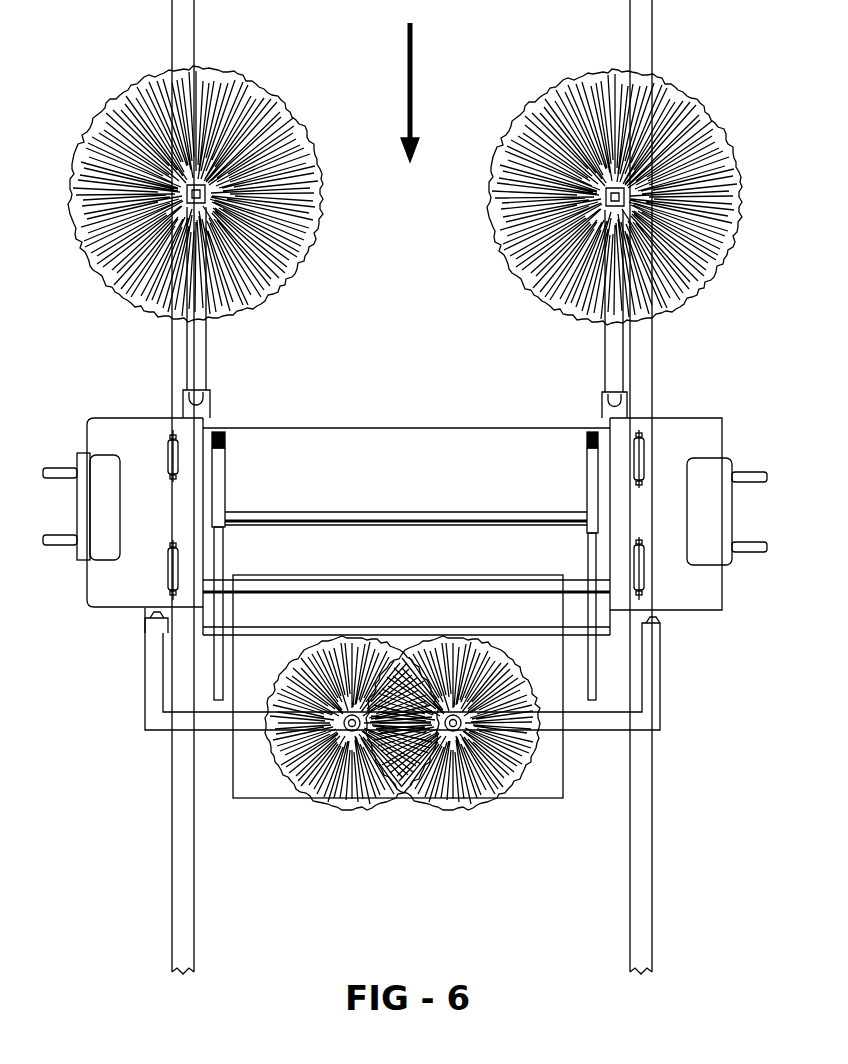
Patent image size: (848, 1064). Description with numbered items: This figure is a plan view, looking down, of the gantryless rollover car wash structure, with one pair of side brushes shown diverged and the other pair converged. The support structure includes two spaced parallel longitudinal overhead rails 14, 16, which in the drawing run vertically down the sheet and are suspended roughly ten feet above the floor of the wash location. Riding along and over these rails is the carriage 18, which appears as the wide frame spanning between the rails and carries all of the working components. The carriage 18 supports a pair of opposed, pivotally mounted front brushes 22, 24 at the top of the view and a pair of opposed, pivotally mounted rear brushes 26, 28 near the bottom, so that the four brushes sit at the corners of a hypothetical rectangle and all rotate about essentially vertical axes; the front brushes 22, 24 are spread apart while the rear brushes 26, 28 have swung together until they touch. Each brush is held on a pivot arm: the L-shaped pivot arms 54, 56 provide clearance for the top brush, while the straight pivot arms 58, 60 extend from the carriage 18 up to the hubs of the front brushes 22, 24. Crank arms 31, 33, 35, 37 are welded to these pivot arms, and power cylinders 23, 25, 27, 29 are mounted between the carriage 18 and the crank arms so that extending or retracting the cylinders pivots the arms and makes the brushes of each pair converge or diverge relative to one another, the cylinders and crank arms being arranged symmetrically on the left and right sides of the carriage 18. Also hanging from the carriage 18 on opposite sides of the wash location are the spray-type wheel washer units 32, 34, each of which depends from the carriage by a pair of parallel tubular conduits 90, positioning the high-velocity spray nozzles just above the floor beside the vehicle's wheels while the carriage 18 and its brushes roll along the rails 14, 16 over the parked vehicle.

The overhead rail 14 is at (173, 842).
The overhead rail 16 is at (652, 842).
The carriage 18 is at (370, 417).
The front brush 22 is at (118, 96).
The front brush 24 is at (692, 88).
The power cylinder 23 is at (168, 452).
The power cylinder 25 is at (644, 462).
The rear brush 26 is at (345, 808).
The rear brush 28 is at (455, 810).
The power cylinder 27 is at (170, 560).
The lower right turnbuckle 29 is at (642, 578).
The crank arm 31 is at (186, 386).
The crank arm 33 is at (627, 398).
The wheel washer unit 32 is at (78, 503).
The wheel washer unit 34 is at (735, 525).
The crank arm 35 is at (180, 660).
The right lower bracket 37 is at (635, 650).
The pivot arm 54 is at (150, 733).
The pivot arm 56 is at (665, 728).
The pivot arm 58 is at (207, 342).
The pivot arm 60 is at (604, 345).
The tubular conduit 90 is at (50, 468).